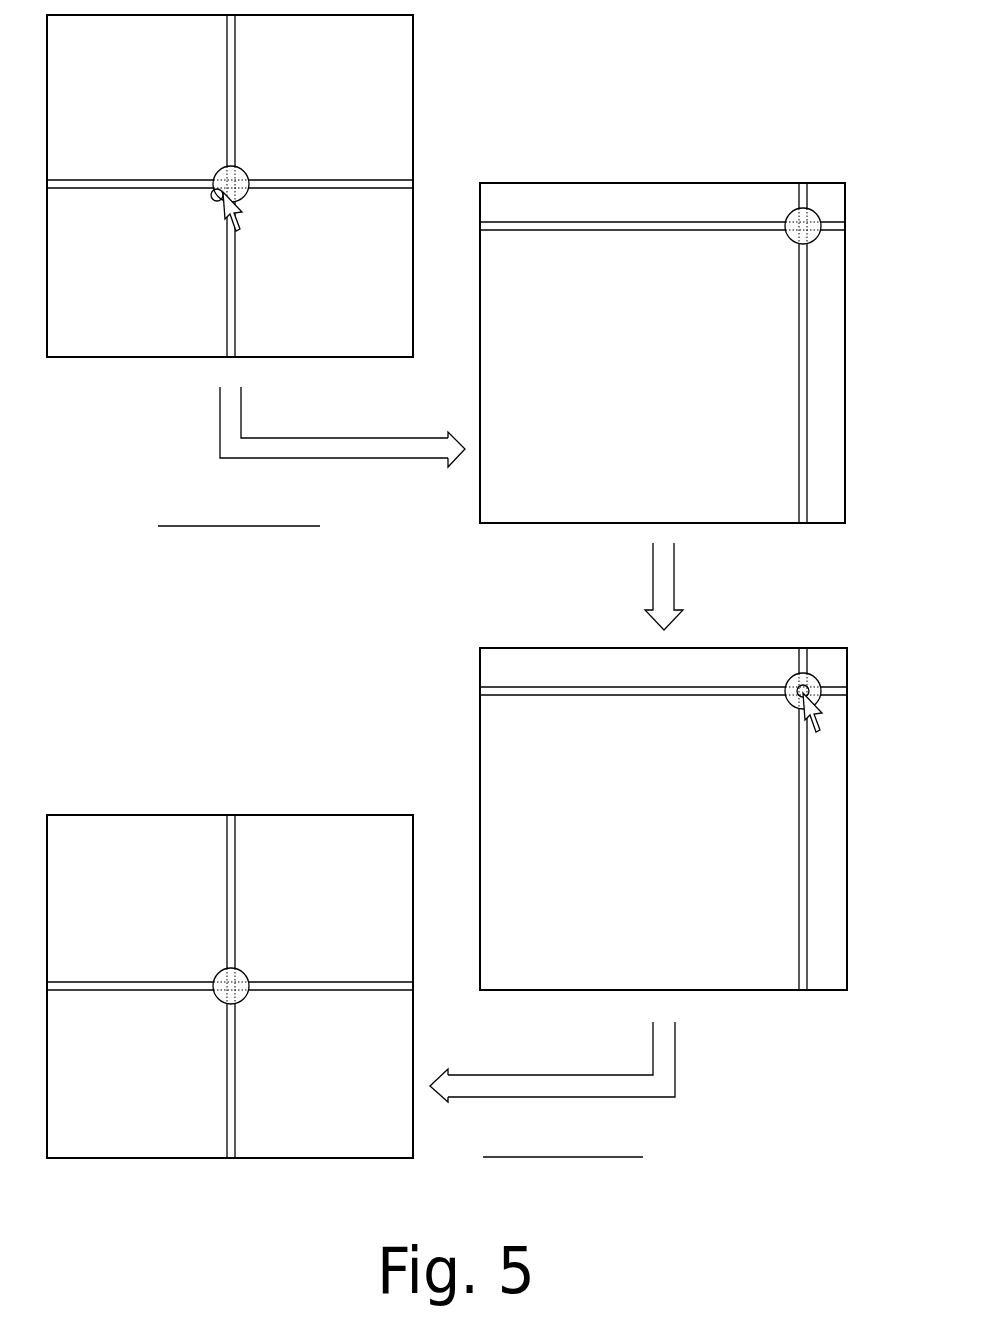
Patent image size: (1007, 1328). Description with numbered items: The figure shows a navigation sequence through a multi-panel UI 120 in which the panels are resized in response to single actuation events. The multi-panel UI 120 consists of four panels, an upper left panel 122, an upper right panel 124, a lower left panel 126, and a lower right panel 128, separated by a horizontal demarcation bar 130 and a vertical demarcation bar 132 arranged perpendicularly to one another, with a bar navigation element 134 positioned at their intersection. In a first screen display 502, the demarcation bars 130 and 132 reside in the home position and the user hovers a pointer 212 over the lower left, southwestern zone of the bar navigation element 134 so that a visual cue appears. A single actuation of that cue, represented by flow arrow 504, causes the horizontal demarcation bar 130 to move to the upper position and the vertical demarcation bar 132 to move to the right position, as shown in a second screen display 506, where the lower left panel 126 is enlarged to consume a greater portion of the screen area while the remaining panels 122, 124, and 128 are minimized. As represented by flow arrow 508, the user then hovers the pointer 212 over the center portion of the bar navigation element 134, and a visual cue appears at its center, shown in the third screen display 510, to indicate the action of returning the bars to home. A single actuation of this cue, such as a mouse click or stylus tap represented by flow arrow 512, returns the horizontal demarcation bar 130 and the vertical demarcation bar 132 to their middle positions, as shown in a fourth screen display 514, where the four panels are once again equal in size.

The multi-panel UI 120 is at (271, 204).
The upper left panel 122 is at (152, 78).
The upper right panel 124 is at (345, 78).
The lower left panel 126 is at (152, 315).
The lower right panel 128 is at (345, 315).
The horizontal demarcation bar 130 is at (322, 189).
The vertical demarcation bar 132 is at (227, 128).
The bar navigation element 134 is at (256, 160).
The pointer 212 is at (222, 222).
The first screen display 502 is at (148, 348).
The flow arrow 504 is at (297, 448).
The second screen display 506 is at (498, 527).
The flow arrow 508 is at (663, 587).
The third screen display 510 is at (728, 978).
The flow arrow 512 is at (613, 1085).
The fourth screen display 514 is at (148, 823).